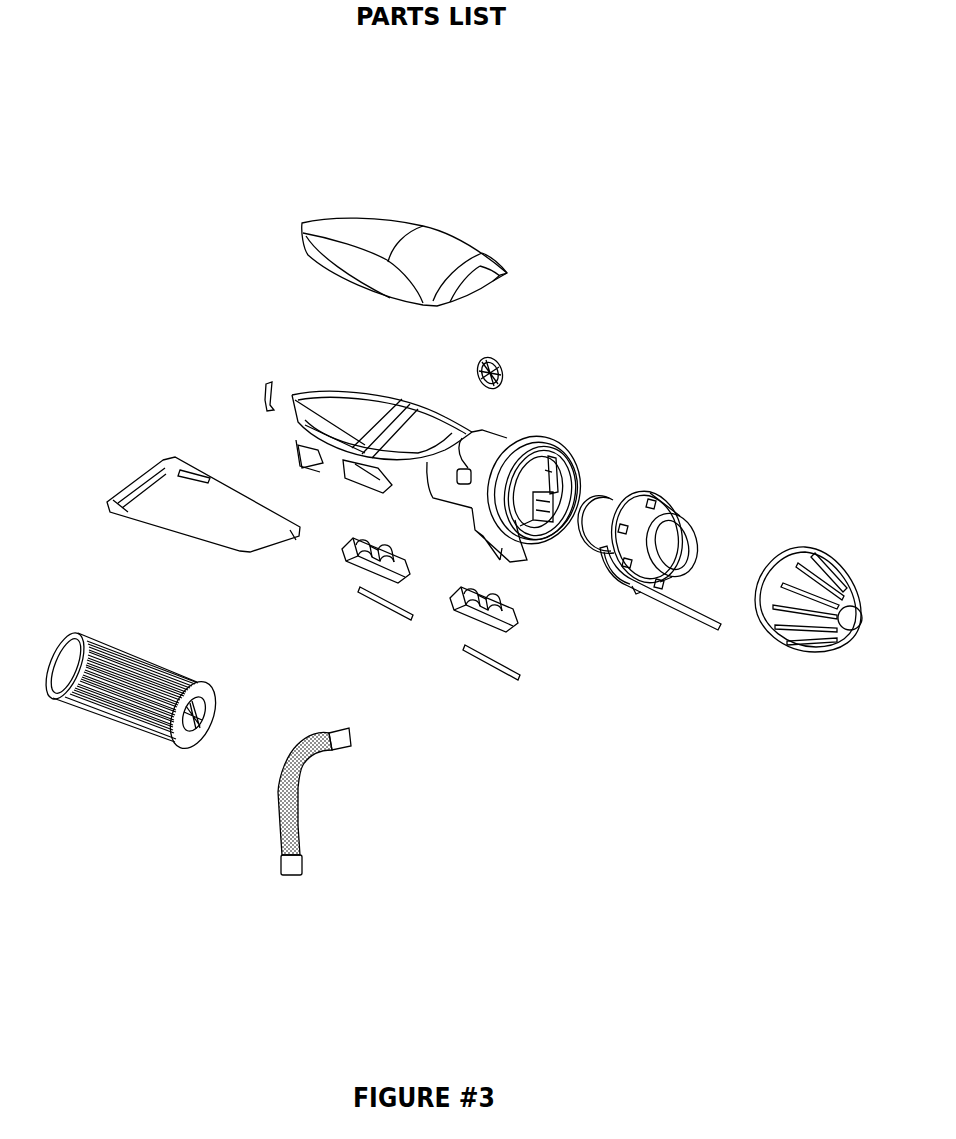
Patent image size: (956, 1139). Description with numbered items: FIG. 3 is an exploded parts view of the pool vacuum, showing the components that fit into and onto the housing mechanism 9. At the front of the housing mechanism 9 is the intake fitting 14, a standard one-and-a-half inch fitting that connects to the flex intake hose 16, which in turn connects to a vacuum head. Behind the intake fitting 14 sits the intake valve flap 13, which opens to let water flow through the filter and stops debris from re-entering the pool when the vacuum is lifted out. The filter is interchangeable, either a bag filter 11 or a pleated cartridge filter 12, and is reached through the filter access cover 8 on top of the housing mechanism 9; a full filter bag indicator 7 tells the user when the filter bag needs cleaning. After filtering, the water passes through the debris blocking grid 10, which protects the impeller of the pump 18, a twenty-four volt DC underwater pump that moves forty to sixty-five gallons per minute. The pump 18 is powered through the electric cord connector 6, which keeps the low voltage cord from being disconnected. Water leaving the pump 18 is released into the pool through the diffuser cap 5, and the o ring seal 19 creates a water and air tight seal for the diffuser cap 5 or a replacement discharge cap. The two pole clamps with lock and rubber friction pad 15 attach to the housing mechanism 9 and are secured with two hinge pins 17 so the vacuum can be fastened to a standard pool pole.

The diffuser cap 5 is at (810, 541).
The electric cord connector 6 is at (640, 605).
The full filter bag indicator 7 is at (456, 490).
The filter access cover 8 is at (430, 222).
The housing mechanism 9 is at (523, 424).
The debris blocking grid 10 is at (514, 345).
The bag filter 11 is at (153, 454).
The cartridge filter 12 is at (53, 632).
The intake valve flap 13 is at (286, 418).
The intake fitting 14 is at (286, 447).
The pole clamps with lock and rubber friction pad 15 is at (464, 584).
The flex intake hose 16 is at (307, 736).
The hinge pins 17 is at (393, 627).
The pump 18 is at (660, 487).
The o ring seal 19 is at (583, 439).